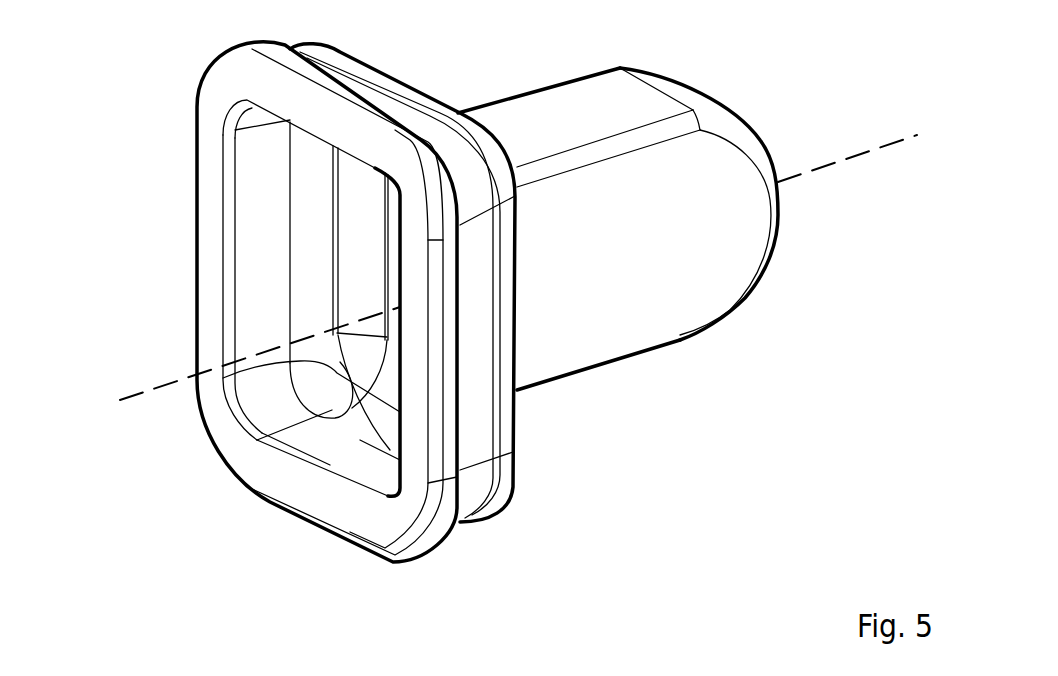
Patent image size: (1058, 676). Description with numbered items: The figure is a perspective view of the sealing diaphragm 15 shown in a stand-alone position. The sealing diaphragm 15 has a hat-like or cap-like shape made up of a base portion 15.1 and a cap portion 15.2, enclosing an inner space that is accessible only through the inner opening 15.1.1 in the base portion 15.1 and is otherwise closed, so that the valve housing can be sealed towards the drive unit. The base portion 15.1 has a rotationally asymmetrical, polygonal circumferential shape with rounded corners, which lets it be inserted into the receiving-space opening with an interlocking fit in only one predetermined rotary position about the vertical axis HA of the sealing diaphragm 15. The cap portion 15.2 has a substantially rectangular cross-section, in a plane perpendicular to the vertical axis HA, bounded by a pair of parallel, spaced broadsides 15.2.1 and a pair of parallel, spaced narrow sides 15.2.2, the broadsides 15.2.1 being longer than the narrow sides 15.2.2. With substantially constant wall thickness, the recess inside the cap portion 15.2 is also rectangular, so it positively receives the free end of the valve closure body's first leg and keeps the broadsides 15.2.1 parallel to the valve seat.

The sealing diaphragm 15 is at (776, 76).
The base portion 15.1 is at (480, 547).
The inner opening 15.1.1 is at (285, 398).
The cap portion 15.2 is at (773, 353).
The broadsides 15.2.1 is at (595, 313).
The narrow sides 15.2.2 is at (580, 113).
The vertical axis HA is at (489, 277).